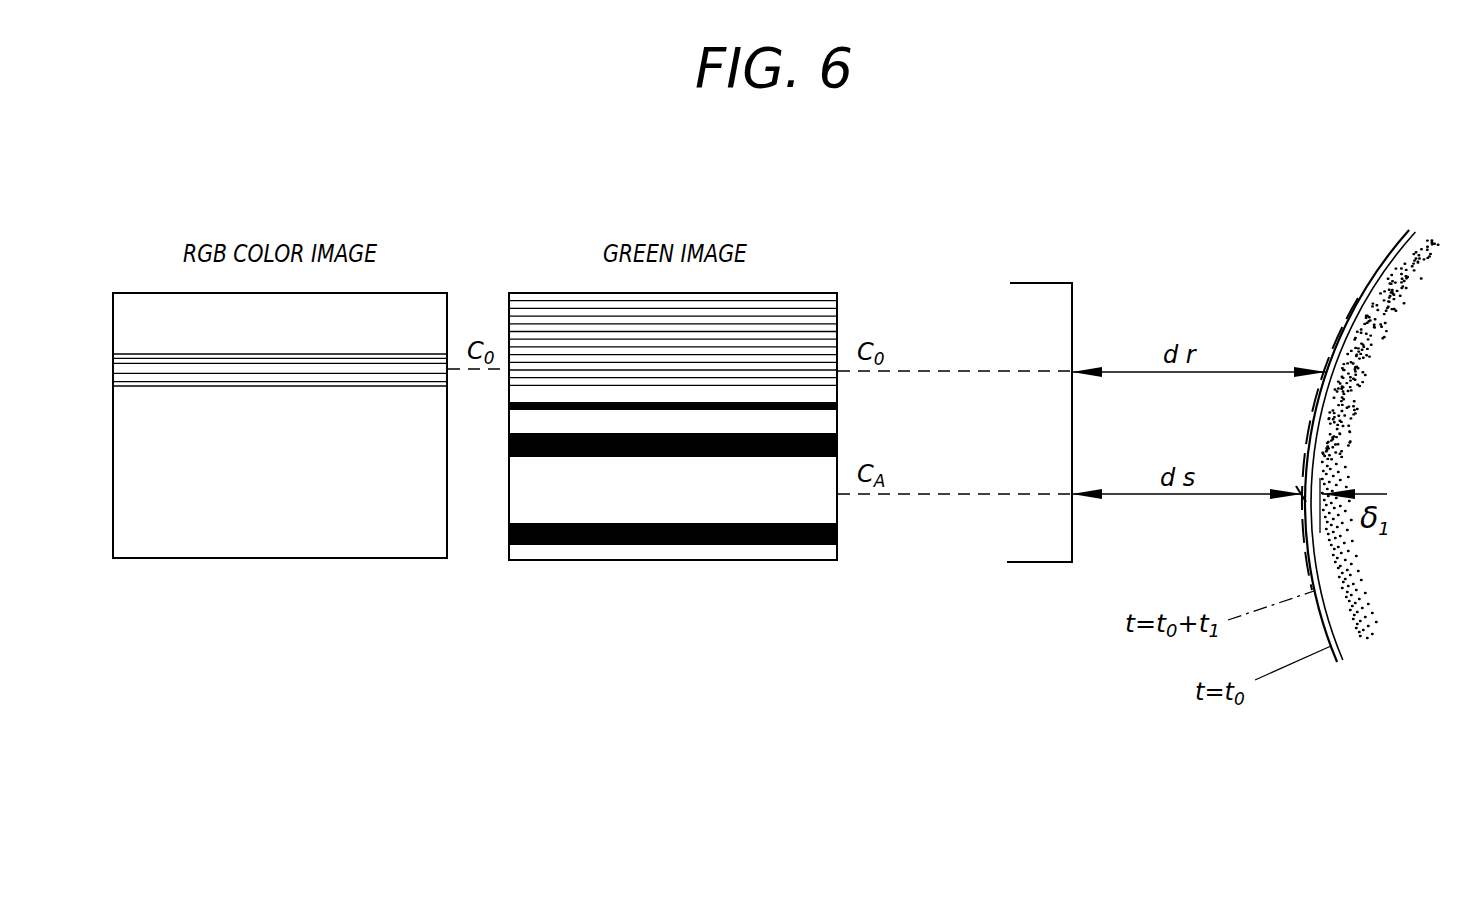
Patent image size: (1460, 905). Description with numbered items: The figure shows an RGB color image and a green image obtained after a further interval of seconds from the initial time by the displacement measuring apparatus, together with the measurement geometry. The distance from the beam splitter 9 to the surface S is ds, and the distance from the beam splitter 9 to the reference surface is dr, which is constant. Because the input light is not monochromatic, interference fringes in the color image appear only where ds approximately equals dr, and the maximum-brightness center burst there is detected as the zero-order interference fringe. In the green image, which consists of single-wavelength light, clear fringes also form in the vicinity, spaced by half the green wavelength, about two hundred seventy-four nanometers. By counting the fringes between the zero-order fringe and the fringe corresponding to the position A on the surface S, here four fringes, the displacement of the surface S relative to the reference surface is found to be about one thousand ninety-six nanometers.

The beam splitter 9 is at (1043, 283).
The surface S is at (1369, 284).
The position to be measured A is at (1303, 500).